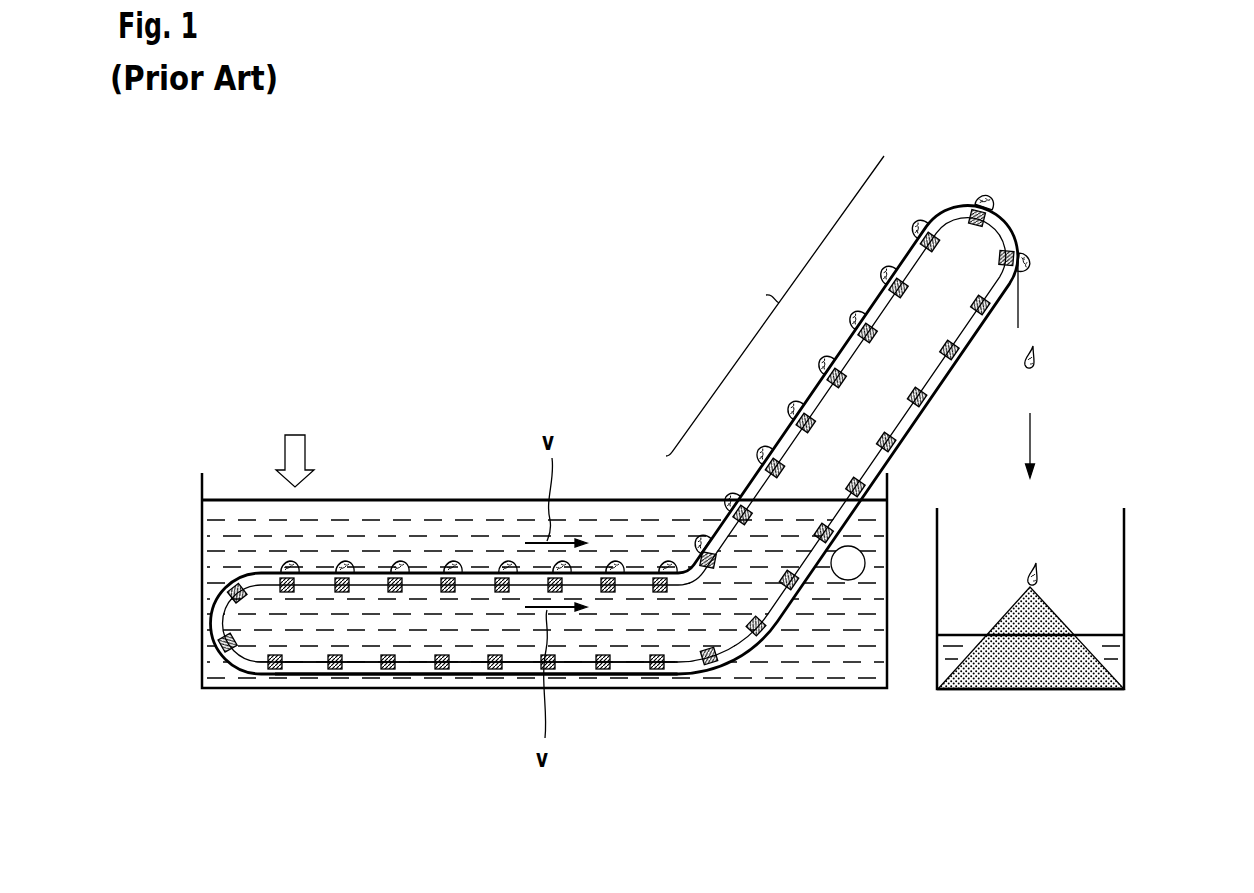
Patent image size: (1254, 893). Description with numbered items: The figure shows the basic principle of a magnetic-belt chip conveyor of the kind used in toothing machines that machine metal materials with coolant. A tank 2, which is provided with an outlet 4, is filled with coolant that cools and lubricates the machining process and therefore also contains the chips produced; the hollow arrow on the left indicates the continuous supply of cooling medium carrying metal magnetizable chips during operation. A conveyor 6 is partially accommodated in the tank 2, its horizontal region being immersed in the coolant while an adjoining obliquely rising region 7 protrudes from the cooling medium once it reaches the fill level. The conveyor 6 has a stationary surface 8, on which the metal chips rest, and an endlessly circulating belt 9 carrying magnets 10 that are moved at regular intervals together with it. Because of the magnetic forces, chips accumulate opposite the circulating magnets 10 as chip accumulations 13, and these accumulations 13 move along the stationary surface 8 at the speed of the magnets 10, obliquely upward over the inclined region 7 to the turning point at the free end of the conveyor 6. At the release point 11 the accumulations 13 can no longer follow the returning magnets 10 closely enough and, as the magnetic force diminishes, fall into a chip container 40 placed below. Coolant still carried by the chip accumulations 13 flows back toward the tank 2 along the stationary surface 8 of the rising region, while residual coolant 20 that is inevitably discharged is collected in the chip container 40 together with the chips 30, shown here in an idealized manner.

The tank 2 is at (795, 702).
The outlet 4 is at (858, 582).
The conveyor 6 is at (652, 447).
The obliquely rising region 7 is at (775, 306).
The stationary surface 8 is at (962, 206).
The endlessly circulating belt 9 is at (369, 665).
The magnets 10 is at (340, 593).
The release point 11 is at (1031, 304).
The particles / solids 13 is at (457, 566).
The residual coolant 20 is at (1117, 653).
The chips 30 is at (1057, 604).
The chip container 40 is at (1030, 691).